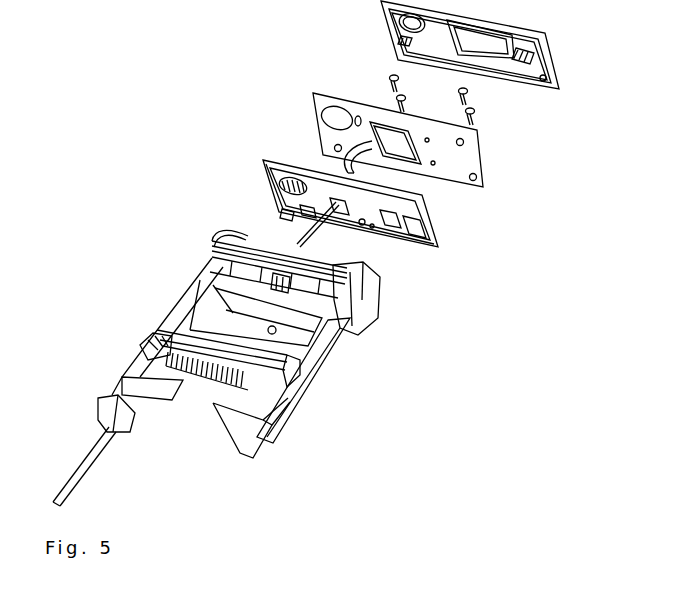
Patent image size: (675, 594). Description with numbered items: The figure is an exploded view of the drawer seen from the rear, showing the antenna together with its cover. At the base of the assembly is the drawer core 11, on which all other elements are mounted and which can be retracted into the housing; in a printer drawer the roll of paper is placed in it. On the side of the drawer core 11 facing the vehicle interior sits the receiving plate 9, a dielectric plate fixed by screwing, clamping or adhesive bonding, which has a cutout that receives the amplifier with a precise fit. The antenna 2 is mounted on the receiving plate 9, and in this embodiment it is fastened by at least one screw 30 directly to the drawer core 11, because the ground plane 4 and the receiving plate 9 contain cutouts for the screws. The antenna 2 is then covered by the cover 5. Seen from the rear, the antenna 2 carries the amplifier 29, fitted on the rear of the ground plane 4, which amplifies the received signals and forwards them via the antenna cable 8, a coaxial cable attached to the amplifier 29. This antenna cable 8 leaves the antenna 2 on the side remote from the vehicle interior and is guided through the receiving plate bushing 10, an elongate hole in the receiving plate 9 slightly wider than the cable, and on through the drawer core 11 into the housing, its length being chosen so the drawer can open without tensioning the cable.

The antenna 2 is at (318, 125).
The ground plane 4 is at (463, 157).
The cover 5 is at (560, 92).
The antenna cable 8 is at (312, 242).
The receiving plate 9 is at (433, 227).
The receiving plate bushing 10 is at (281, 213).
The drawer core 11 is at (338, 338).
The amplifier 29 is at (423, 177).
The screw 30 is at (466, 114).